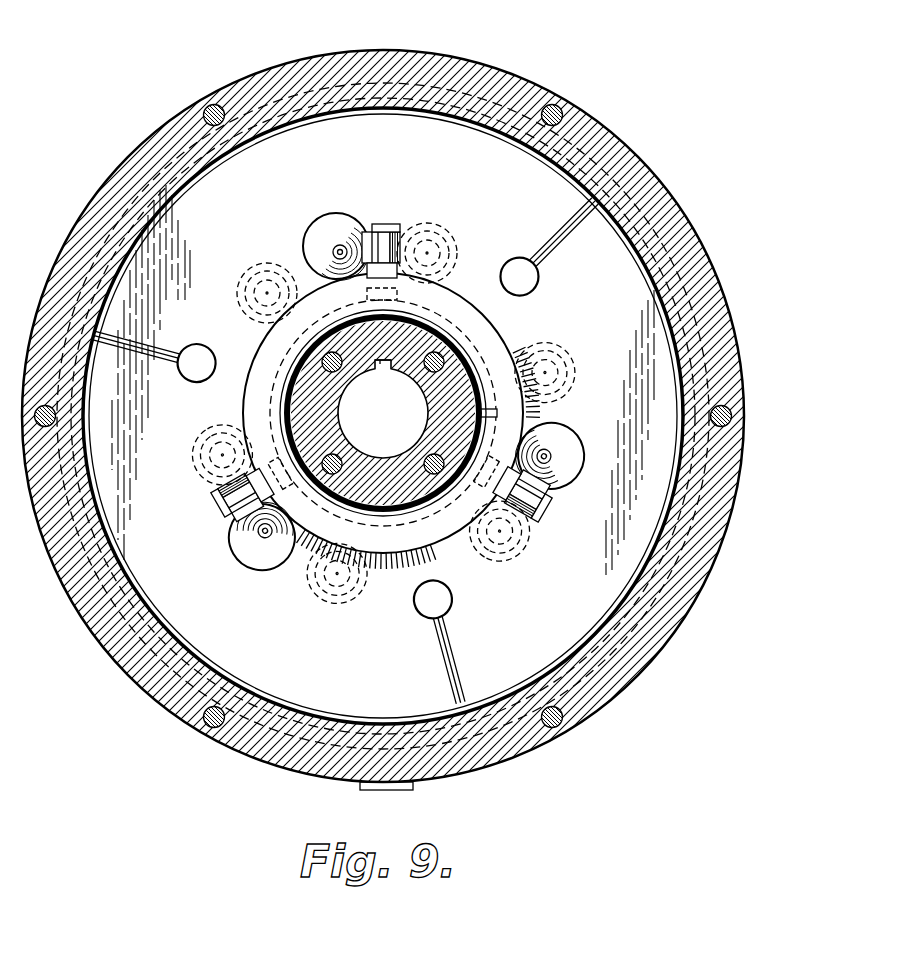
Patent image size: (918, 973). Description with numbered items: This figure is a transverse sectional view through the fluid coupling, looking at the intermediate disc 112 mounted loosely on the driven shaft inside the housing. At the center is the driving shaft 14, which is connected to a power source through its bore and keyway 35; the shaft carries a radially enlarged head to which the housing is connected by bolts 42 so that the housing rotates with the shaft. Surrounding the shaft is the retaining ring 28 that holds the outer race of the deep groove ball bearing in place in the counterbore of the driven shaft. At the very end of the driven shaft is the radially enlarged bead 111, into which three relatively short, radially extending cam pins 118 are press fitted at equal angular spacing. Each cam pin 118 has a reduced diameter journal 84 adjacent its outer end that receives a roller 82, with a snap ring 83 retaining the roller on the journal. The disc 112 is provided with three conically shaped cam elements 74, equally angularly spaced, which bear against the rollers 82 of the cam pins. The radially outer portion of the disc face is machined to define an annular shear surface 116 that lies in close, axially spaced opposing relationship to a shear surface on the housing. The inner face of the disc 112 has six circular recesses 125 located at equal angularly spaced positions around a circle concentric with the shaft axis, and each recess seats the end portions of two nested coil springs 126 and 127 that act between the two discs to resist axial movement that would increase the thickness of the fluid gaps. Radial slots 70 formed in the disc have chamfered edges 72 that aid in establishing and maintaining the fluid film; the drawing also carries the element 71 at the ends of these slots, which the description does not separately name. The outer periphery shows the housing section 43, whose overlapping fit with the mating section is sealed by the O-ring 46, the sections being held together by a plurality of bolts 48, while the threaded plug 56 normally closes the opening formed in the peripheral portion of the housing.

The driving shaft 14 is at (394, 462).
The retaining ring 28 is at (282, 402).
The keyway 35 is at (380, 373).
The bolts 42 is at (349, 390).
The housing section 43 is at (402, 57).
The O-ring 46 is at (342, 100).
The bolts 48 is at (555, 104).
The threaded plug 56 is at (377, 793).
The radial slots 70 is at (580, 225).
The knob 71 is at (506, 264).
The chamfered edges 72 is at (557, 238).
The conical cam elements 74 is at (320, 235).
The rollers 82 is at (375, 230).
The snap rings 83 is at (394, 230).
The journals 84 is at (553, 503).
The bead 111 is at (484, 331).
The intermediate disc 112 is at (389, 169).
The annular shear surface 116 is at (263, 147).
The cam pins 118 is at (396, 278).
The circular recesses 125 is at (257, 266).
The coil spring 126 is at (242, 296).
The coil spring 127 is at (246, 323).